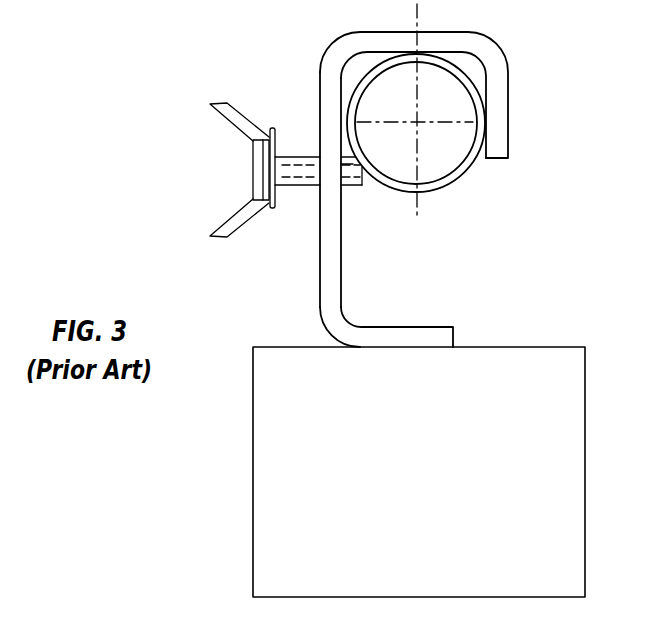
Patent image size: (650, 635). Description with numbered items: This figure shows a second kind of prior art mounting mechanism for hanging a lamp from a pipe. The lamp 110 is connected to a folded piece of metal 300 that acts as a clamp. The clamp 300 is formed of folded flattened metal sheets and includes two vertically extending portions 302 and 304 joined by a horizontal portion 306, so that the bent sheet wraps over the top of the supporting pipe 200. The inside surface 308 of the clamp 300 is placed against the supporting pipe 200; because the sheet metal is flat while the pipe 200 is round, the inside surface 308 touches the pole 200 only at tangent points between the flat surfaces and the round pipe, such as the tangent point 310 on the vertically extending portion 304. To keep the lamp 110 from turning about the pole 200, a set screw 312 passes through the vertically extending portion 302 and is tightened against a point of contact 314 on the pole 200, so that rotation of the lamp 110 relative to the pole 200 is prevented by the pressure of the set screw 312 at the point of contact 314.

The lamp 110 is at (442, 485).
The supporting pipe 200 is at (458, 175).
The folded piece of metal 300 is at (410, 173).
The vertically extending portion 302 is at (320, 97).
The vertically extending portion 304 is at (517, 95).
The horizontal portion 306 is at (458, 32).
The inside surface 308 is at (363, 50).
The tangent point 310 is at (485, 115).
The set screw 312 is at (260, 177).
The point of contact 314 is at (370, 190).